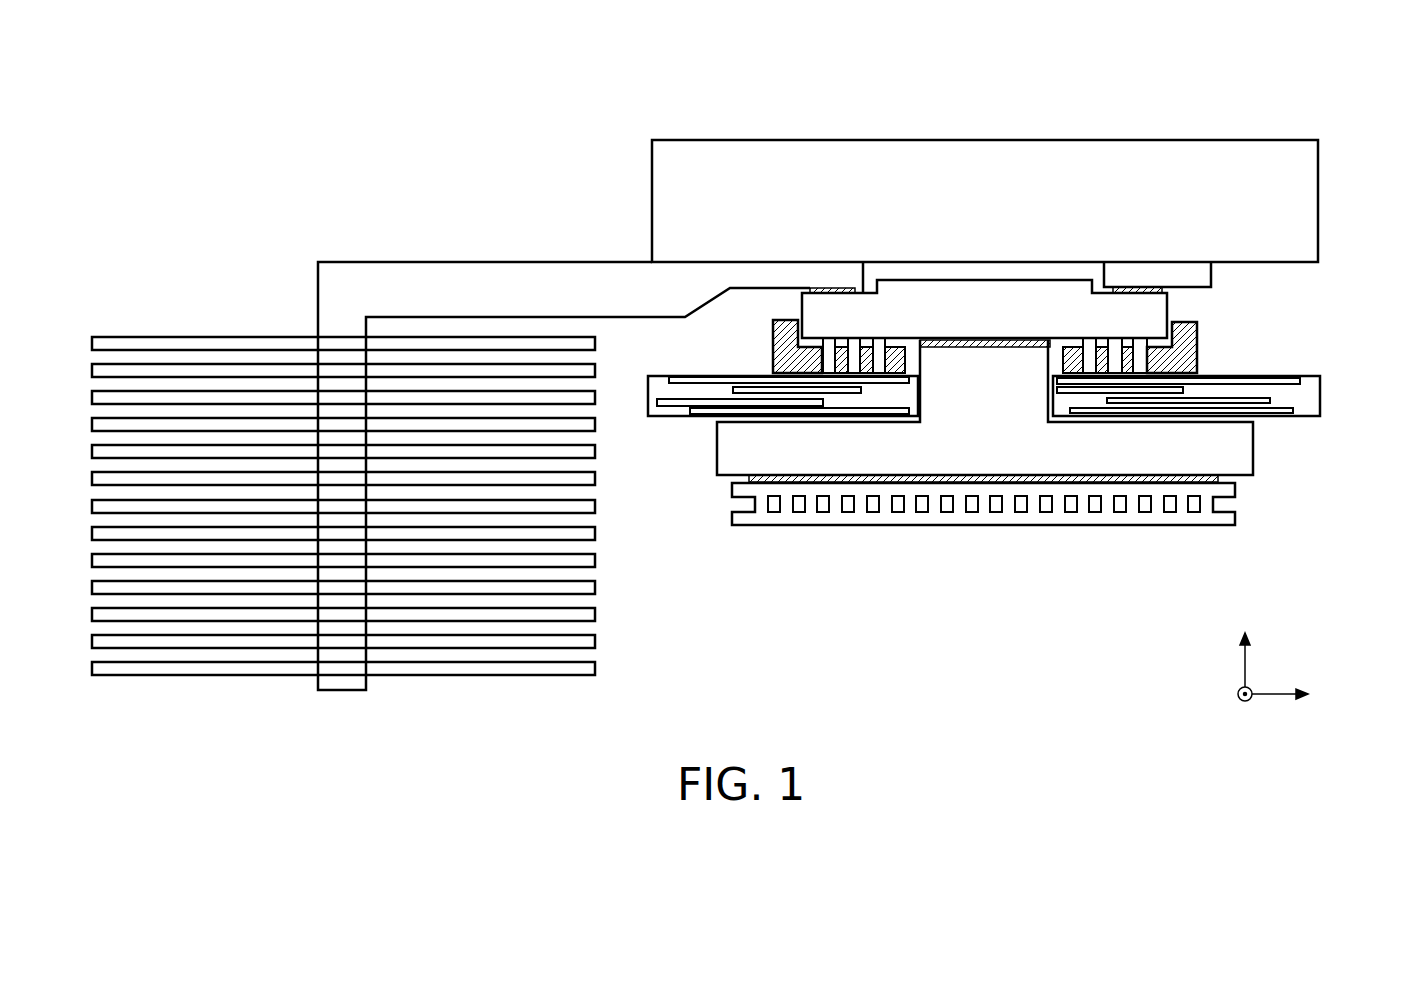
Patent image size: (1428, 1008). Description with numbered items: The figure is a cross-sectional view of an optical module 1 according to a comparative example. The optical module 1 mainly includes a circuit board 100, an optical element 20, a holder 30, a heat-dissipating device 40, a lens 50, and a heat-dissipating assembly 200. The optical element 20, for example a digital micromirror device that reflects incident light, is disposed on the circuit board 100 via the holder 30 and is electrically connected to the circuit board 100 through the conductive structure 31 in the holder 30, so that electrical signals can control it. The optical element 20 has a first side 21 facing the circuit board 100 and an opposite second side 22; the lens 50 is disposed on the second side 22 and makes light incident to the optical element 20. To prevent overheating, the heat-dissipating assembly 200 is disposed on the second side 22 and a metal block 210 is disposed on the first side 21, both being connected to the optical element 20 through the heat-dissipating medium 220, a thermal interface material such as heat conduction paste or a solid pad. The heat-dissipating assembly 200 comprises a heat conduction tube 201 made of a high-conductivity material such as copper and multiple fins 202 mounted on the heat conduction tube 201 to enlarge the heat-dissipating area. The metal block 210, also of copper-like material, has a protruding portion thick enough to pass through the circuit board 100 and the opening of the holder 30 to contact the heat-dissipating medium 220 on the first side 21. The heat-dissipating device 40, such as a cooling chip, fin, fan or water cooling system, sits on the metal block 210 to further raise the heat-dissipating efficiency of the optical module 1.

The optical module 1 is at (390, 50).
The heat-dissipating assembly 200 is at (161, 38).
The heat conduction tube 201 is at (423, 280).
The fins 202 is at (122, 340).
The lens 50 is at (1302, 203).
The optical element 20 is at (1148, 312).
The first side 21 is at (878, 338).
The second side 22 is at (866, 286).
The heat-dissipating medium 220 is at (1005, 338).
The holder 30 is at (1185, 336).
The conductive structure 31 is at (1152, 360).
The circuit board 100 is at (1308, 397).
The metal block 210 is at (1240, 447).
The heat-dissipating device 40 is at (1237, 516).